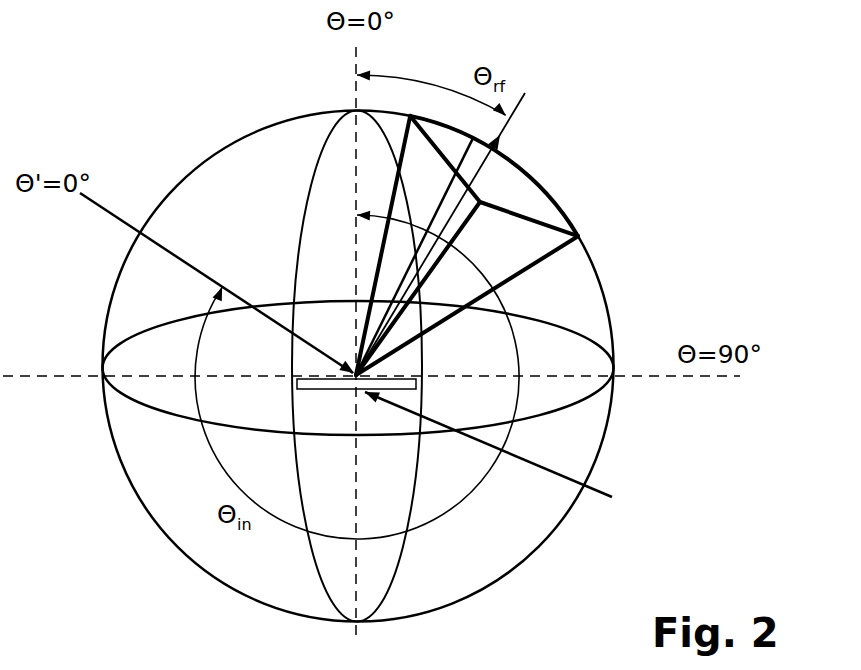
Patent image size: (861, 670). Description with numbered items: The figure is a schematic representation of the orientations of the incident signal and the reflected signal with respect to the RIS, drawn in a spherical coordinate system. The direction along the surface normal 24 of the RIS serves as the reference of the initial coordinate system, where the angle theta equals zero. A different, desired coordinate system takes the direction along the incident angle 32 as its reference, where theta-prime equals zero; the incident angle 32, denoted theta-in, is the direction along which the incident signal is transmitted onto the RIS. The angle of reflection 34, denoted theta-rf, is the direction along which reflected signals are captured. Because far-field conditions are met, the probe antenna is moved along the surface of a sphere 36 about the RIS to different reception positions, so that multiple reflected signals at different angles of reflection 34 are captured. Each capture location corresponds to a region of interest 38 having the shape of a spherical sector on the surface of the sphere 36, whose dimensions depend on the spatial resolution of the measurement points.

The surface normal 24 is at (355, 150).
The incident angle 32 is at (207, 440).
The angle of reflection 34 is at (442, 82).
The sphere 36 is at (617, 320).
The region of interest 38 is at (568, 212).